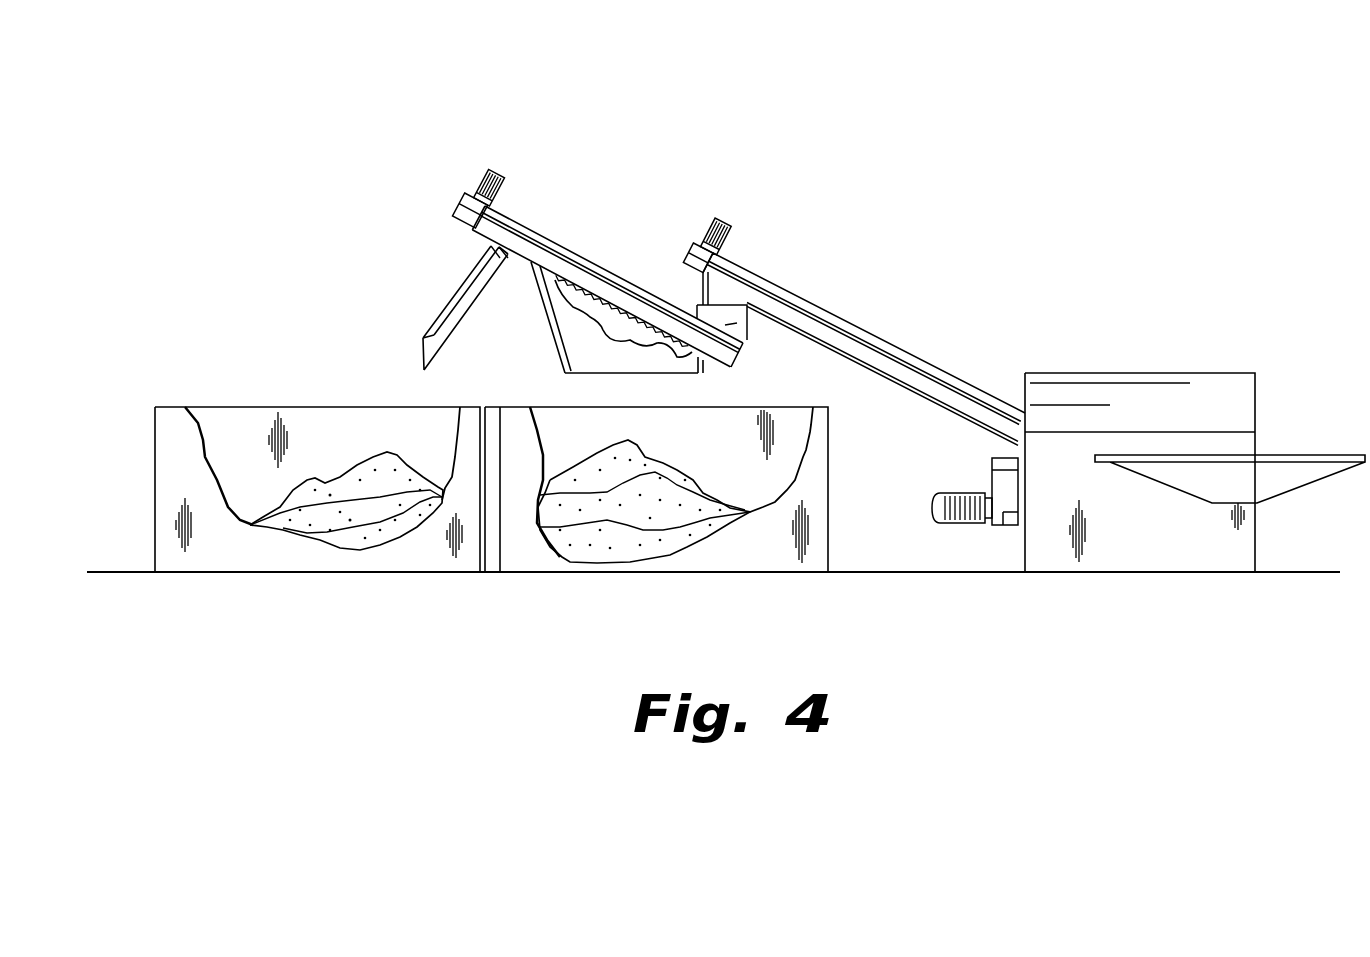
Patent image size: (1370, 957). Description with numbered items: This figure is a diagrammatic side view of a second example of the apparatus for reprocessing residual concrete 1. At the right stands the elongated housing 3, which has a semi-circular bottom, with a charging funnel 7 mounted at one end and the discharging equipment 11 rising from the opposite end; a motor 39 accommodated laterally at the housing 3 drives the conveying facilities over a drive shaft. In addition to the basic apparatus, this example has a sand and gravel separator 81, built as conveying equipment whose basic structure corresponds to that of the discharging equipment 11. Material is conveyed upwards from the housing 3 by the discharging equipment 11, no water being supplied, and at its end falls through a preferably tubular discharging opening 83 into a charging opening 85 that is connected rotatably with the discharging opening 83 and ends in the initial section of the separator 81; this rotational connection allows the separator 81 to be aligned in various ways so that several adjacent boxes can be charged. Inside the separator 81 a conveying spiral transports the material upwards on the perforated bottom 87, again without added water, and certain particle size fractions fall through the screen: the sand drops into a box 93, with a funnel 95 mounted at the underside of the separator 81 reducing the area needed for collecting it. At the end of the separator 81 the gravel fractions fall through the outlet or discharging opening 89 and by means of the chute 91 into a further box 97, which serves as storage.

The apparatus for reprocessing residual concrete 1 is at (1195, 411).
The housing 3 is at (1200, 400).
The charging funnel 7 is at (1319, 497).
The discharging equipment 11 is at (907, 333).
The motor 39 is at (948, 495).
The sand and gravel separator 81 is at (597, 160).
The discharging opening 83 is at (724, 292).
The charging opening 85 is at (735, 323).
The perforated bottom 87 is at (552, 302).
The discharging opening 89 is at (490, 252).
The chute 91 is at (432, 337).
The box 93 is at (530, 548).
The funnel 95 is at (700, 374).
The further box 97 is at (222, 550).